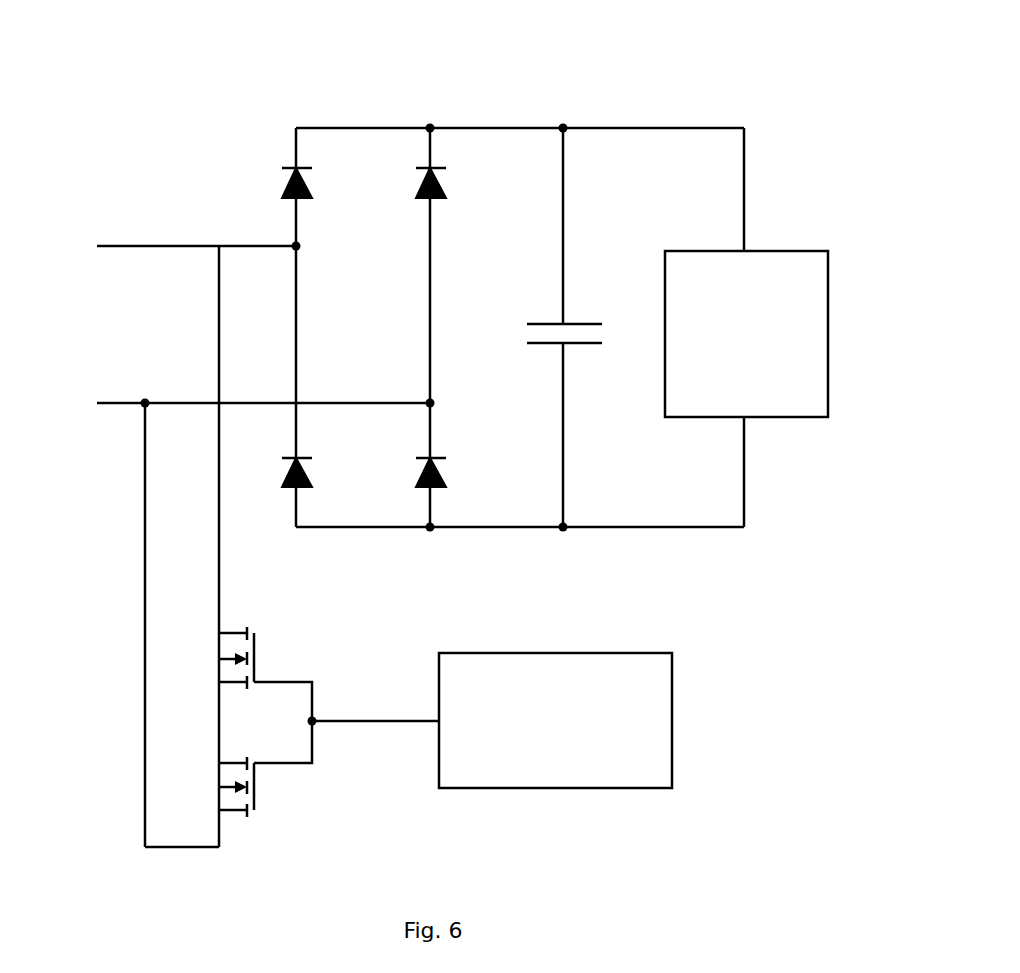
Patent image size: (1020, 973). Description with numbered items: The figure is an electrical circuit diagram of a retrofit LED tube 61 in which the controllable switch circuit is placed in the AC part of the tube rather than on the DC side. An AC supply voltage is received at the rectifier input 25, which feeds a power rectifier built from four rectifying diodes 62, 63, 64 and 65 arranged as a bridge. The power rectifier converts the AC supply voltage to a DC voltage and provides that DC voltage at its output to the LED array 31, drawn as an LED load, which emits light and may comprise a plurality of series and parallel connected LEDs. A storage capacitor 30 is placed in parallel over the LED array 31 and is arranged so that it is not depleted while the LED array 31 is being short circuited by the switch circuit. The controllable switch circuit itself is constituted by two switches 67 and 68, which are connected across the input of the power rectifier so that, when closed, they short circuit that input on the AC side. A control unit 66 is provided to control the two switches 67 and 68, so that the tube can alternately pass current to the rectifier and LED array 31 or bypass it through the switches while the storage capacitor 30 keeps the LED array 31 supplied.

The retrofit LED tube 61 is at (782, 94).
The rectifier input 25 is at (94, 344).
The rectifying diode 62 is at (277, 175).
The rectifying diode 63 is at (410, 158).
The rectifying diode 64 is at (304, 494).
The rectifying diode 65 is at (441, 493).
The storage capacitor 30 is at (586, 363).
The LED array 31 is at (789, 399).
The control unit 66 is at (656, 681).
The switch 67 is at (266, 647).
The switch 68 is at (266, 790).